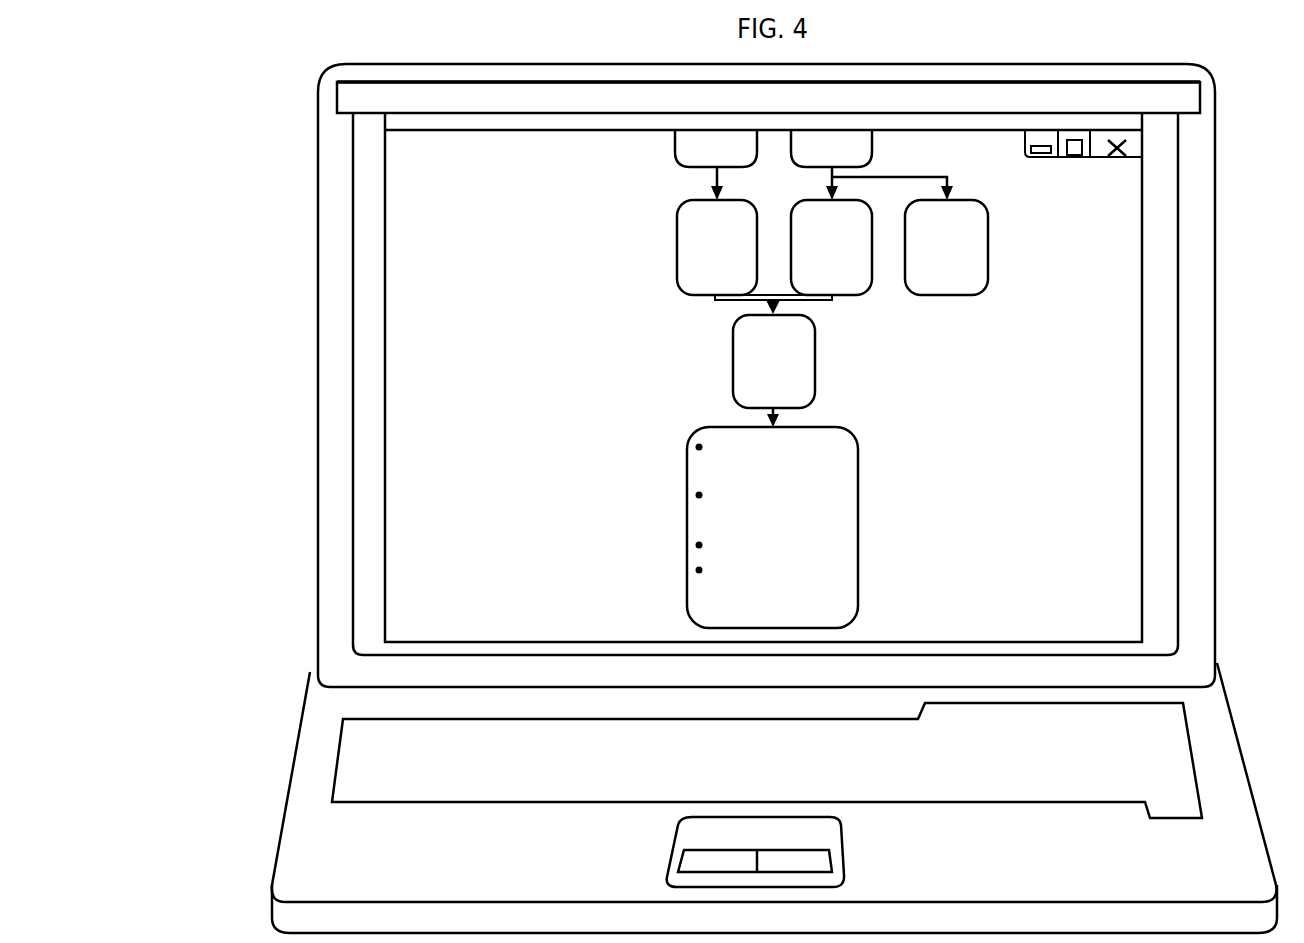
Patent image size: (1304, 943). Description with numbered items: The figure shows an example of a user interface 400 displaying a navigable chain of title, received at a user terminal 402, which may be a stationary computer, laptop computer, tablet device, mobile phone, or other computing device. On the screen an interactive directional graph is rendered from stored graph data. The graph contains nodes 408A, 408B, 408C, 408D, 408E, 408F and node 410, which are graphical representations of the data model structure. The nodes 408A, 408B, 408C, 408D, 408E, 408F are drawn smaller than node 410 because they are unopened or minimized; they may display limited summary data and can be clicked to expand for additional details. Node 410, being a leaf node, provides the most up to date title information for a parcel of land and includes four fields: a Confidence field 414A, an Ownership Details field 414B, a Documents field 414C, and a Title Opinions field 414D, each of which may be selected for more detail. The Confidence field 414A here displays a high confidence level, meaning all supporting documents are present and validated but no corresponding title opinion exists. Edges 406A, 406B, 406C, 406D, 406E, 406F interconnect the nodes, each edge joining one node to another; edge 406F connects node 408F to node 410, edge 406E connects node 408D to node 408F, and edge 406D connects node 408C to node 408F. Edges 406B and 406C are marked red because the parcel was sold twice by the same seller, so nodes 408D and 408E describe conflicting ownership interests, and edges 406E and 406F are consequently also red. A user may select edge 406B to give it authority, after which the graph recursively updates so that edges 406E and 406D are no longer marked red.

The user interface 400 is at (252, 375).
The user terminal 402 is at (1217, 217).
The edge 406A is at (712, 182).
The edge 406B is at (832, 185).
The edge 406C is at (945, 177).
The edge 406D is at (717, 297).
The edge 406E is at (800, 298).
The edge 406F is at (773, 502).
The node 408A is at (675, 143).
The node 408B is at (873, 137).
The node 408C is at (675, 253).
The node 408D is at (870, 280).
The node 408E is at (988, 255).
The node 408F is at (815, 370).
The node 410 is at (858, 542).
The Confidence field 414A is at (699, 447).
The Ownership Details field 414B is at (699, 495).
The Documents field 414C is at (699, 545).
The Title Opinions field 414D is at (699, 570).